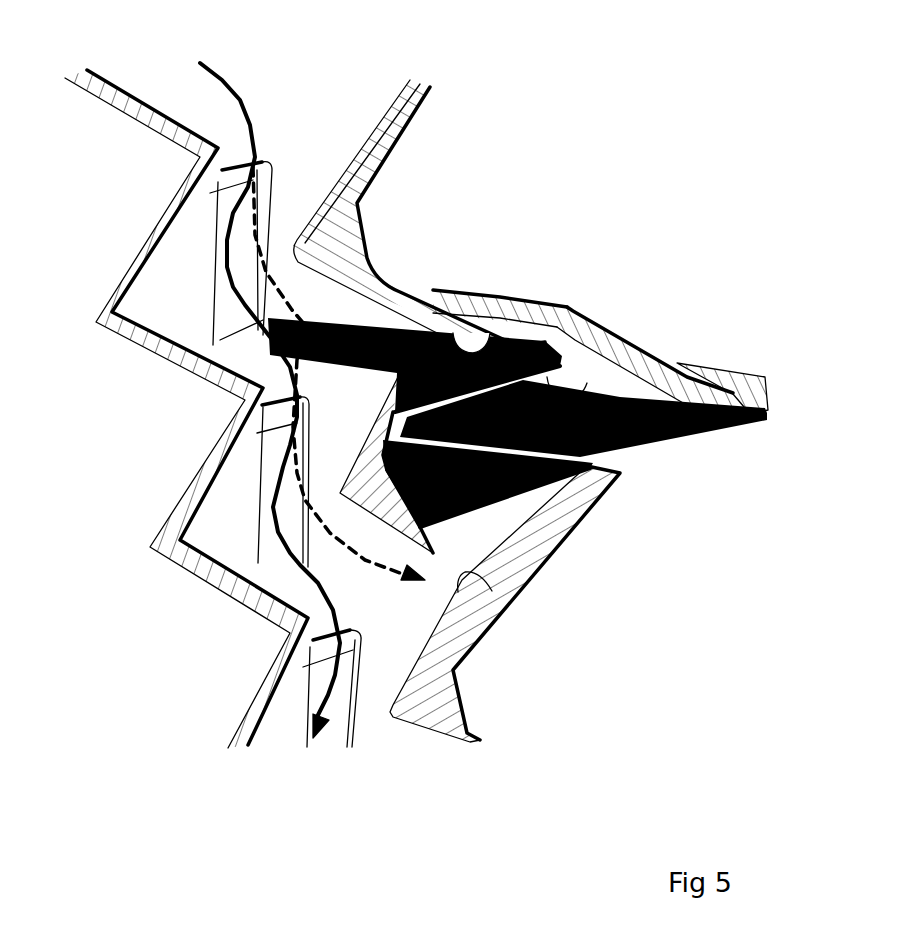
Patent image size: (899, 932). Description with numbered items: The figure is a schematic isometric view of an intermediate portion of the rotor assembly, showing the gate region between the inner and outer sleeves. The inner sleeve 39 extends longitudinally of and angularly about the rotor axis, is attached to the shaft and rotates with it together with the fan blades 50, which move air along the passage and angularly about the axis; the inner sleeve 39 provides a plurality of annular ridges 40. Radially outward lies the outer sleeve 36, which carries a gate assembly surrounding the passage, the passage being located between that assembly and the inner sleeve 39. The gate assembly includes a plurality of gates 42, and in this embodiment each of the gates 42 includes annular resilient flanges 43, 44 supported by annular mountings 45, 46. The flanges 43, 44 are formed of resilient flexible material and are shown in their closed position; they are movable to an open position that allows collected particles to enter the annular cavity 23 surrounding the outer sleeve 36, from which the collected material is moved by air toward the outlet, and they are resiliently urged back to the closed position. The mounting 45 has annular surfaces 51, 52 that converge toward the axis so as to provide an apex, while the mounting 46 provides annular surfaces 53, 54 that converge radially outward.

The annular cavity 23 is at (768, 565).
The outer sleeve 36 is at (528, 170).
The inner sleeve 39 is at (135, 543).
The annular ridges 40 is at (200, 157).
The gates 42 is at (643, 220).
The annular resilient flange 43 is at (582, 393).
The annular resilient flange 44 is at (693, 448).
The annular mounting 45 is at (385, 345).
The annular mounting 46 is at (473, 300).
The fan blades 50 is at (272, 152).
The surface 51 is at (362, 420).
The surface 52 is at (362, 535).
The annular surface 53 is at (510, 340).
The annular surface 54 is at (490, 583).